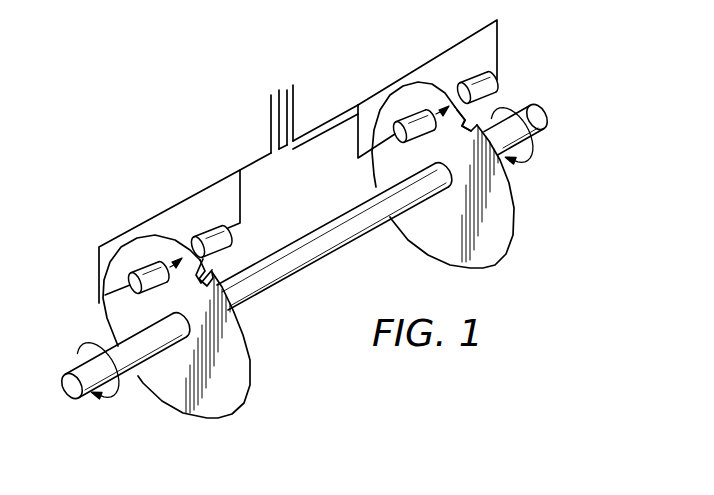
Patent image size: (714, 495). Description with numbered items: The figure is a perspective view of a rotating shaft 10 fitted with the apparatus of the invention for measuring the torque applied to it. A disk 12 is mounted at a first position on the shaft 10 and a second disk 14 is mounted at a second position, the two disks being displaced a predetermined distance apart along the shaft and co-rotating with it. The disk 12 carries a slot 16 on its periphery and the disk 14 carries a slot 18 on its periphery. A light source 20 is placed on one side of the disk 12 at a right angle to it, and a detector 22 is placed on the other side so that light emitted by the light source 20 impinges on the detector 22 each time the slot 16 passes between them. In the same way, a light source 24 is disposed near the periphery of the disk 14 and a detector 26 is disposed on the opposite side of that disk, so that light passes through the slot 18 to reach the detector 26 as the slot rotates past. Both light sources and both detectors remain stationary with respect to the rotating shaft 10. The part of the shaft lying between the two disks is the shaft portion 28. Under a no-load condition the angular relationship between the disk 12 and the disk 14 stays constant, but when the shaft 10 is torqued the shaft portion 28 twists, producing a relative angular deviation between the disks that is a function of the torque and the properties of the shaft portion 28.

The rotating shaft 10 is at (70, 360).
The disk 12 is at (246, 342).
The disk 14 is at (455, 241).
The slot 16 is at (212, 264).
The slot 18 is at (466, 127).
The light source 20 is at (143, 270).
The detector 22 is at (213, 232).
The light source 24 is at (396, 138).
The detector 26 is at (500, 85).
The shaft portion 28 is at (312, 246).